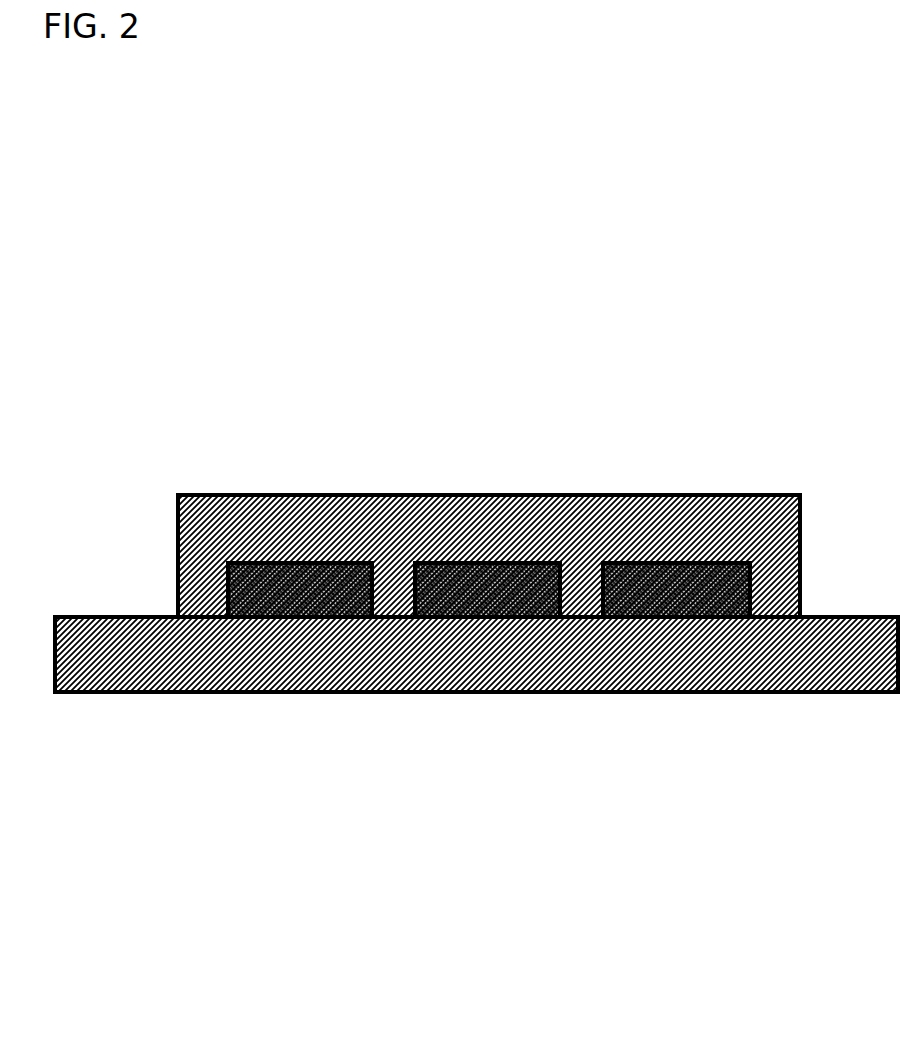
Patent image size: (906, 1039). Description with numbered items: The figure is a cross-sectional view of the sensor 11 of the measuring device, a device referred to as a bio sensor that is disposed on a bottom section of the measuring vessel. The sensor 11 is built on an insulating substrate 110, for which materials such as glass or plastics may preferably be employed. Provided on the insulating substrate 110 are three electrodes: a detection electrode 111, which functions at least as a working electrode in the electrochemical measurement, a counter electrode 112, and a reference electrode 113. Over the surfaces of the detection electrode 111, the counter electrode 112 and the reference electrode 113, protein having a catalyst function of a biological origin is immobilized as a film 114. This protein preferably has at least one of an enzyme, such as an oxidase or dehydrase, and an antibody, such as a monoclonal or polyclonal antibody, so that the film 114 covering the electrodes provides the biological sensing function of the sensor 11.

The sensor 11 is at (693, 227).
The insulating substrate 110 is at (388, 675).
The detection electrode 111 is at (498, 572).
The counter electrode 112 is at (690, 572).
The reference electrode 113 is at (328, 570).
The film 114 is at (237, 520).